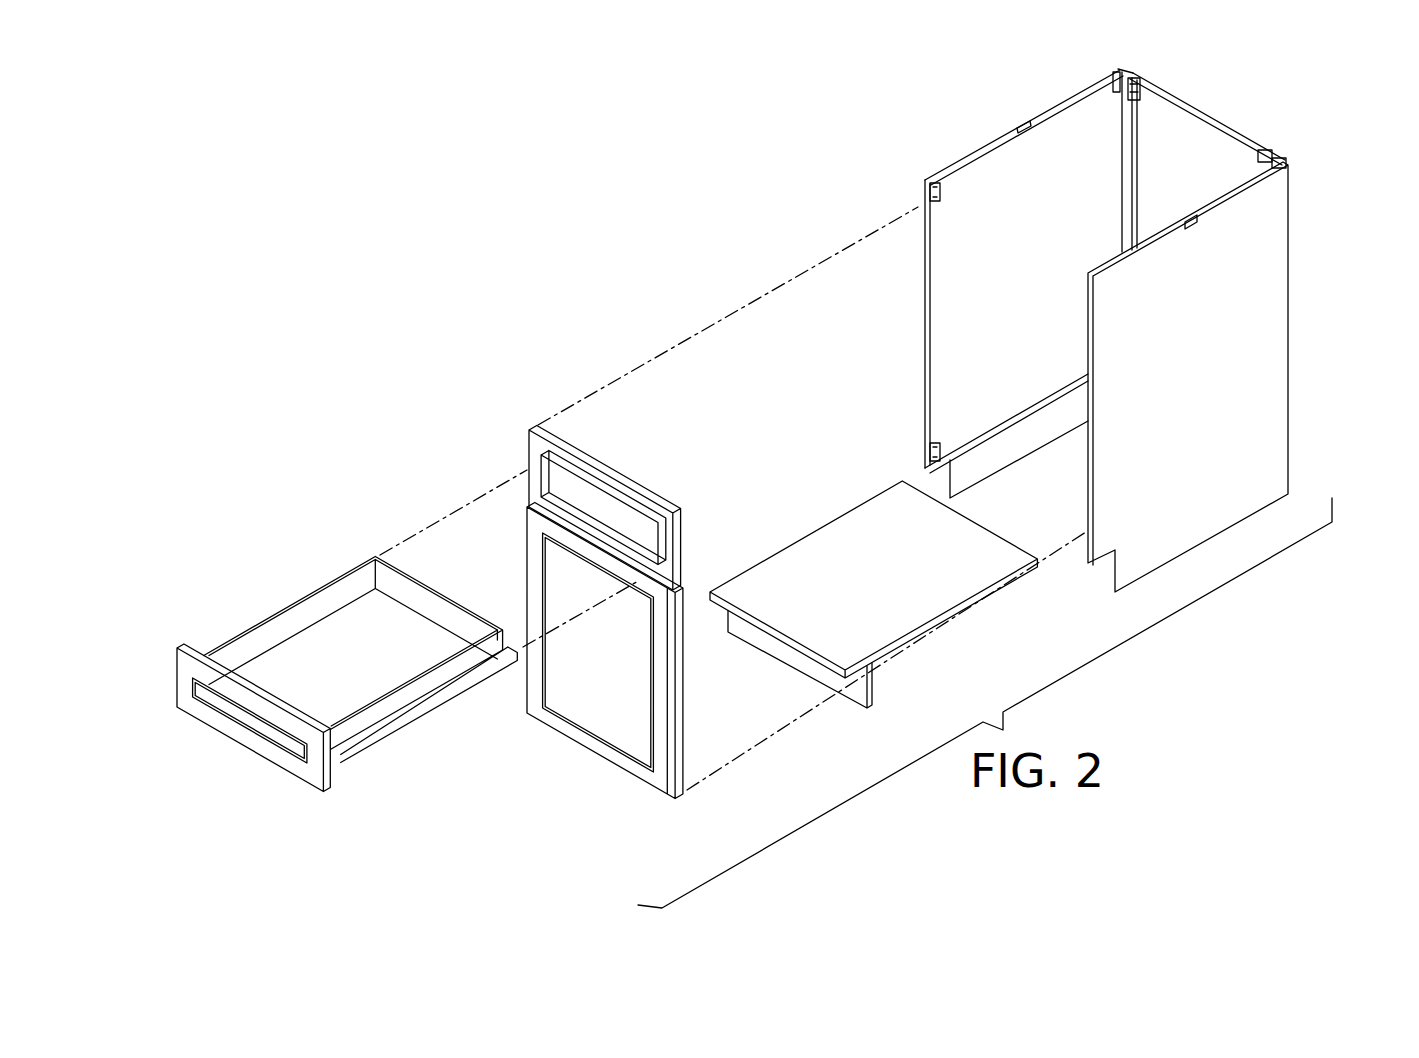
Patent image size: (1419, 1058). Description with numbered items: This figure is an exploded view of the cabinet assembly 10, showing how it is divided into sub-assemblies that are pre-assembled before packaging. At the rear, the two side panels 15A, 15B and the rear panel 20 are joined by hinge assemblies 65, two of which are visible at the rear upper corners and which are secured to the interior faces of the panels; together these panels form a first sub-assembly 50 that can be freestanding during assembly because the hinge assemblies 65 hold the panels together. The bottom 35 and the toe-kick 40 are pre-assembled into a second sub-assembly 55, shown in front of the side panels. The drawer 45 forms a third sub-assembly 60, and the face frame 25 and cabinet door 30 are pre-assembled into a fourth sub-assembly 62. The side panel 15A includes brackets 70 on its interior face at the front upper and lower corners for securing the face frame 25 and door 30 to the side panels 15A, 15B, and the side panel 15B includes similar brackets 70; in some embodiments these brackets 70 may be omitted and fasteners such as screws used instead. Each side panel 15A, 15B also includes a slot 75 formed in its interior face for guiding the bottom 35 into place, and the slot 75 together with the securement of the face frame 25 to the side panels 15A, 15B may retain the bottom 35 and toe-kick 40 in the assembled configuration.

The cabinet assembly 10 is at (1332, 68).
The side panel 15A is at (987, 140).
The side panel 15B is at (1275, 405).
The rear panel 20 is at (1205, 112).
The face frame 25 is at (527, 438).
The cabinet door 30 is at (610, 725).
The bottom 35 is at (935, 627).
The toe-kick 40 is at (830, 672).
The drawer 45 is at (180, 676).
The first sub-assembly 50 is at (965, 88).
The second sub-assembly 55 is at (815, 498).
The third sub-assembly 60 is at (250, 580).
The fourth sub-assembly 62 is at (515, 418).
The hinge assembly 65 is at (1140, 72).
The bracket 70 is at (926, 190).
The slot 75 is at (998, 440).